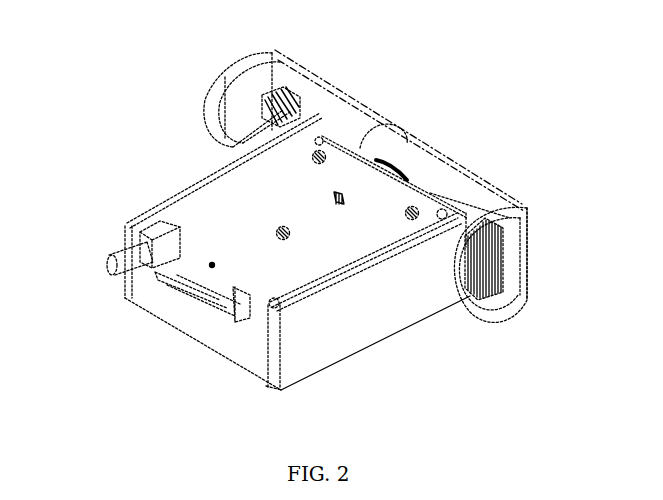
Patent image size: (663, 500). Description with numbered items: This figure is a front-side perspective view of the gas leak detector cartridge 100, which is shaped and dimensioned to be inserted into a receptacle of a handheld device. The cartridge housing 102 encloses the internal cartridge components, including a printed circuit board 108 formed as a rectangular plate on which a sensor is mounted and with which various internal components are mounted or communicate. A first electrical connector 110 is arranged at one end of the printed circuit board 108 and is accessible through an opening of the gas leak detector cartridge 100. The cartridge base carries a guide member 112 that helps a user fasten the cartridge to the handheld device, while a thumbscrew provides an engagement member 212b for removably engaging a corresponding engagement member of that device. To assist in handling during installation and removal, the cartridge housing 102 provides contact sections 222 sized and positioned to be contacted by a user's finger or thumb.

The gas leak detector cartridge 100 is at (486, 114).
The cartridge housing 102 is at (404, 329).
The printed circuit board 108 is at (360, 148).
The first electrical connector 110 is at (192, 313).
The guide member 112 is at (110, 255).
The contact section 222 is at (203, 127).
The engagement member 212b is at (267, 97).